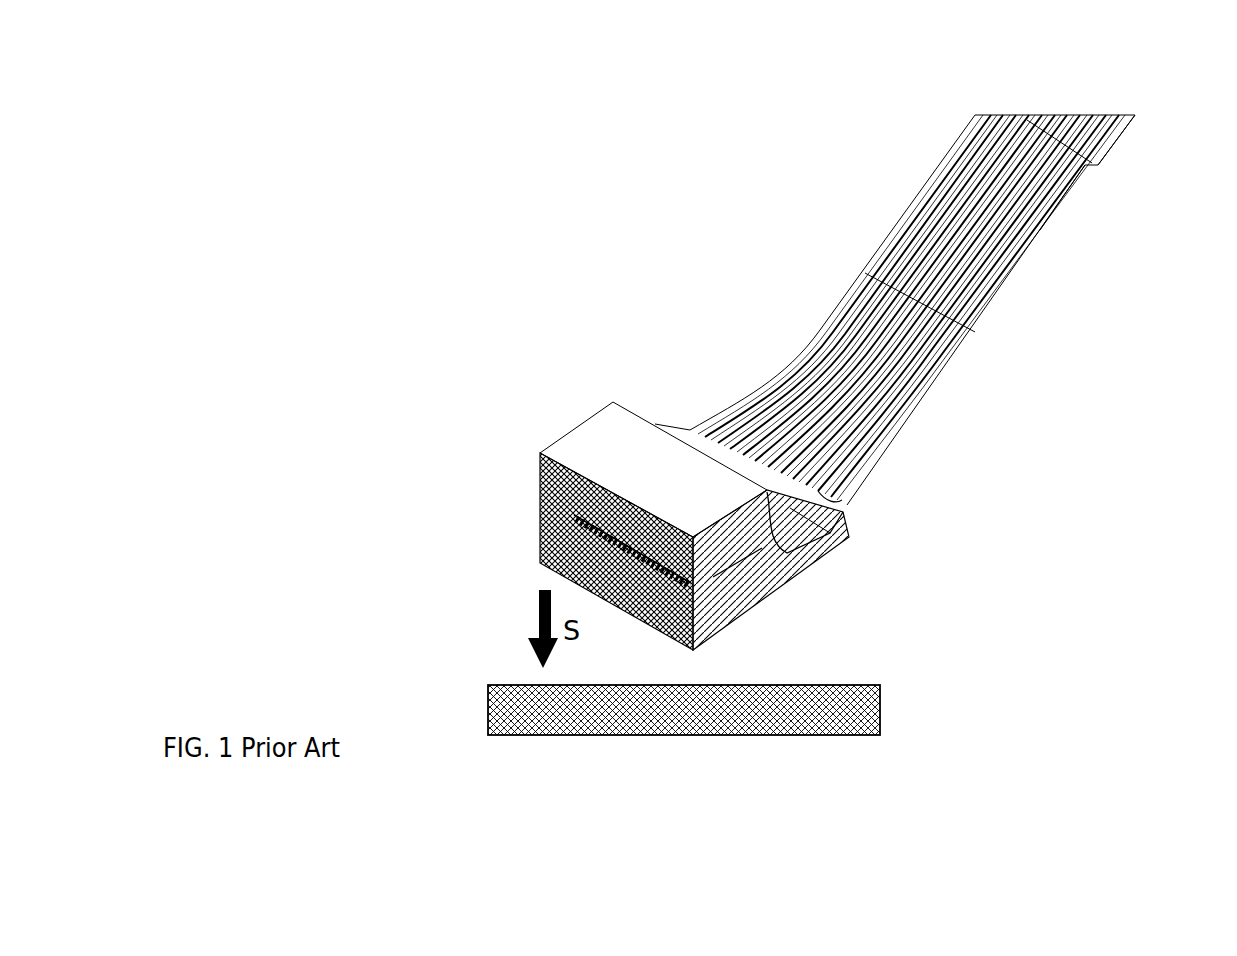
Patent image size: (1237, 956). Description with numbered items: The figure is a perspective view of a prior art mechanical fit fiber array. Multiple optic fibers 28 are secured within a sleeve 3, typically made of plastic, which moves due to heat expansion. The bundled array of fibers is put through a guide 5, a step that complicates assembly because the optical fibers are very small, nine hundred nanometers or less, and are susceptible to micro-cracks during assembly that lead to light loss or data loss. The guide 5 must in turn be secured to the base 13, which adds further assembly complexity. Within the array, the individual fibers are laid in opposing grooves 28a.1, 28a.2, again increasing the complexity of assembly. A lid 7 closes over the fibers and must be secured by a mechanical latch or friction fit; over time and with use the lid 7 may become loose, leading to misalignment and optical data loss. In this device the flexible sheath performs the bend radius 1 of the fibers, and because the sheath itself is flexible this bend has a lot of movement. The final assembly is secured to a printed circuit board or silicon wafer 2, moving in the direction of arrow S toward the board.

The bend radius 1 is at (888, 405).
The printed circuit board or silicon wafer 2 is at (685, 726).
The sleeve 3 is at (1085, 178).
The guide 5 is at (790, 525).
The lid 7 is at (613, 458).
The base 13 is at (730, 588).
The optic fibers 28 is at (1112, 155).
The groove 28a.1 is at (578, 522).
The groove 28a.2 is at (598, 547).